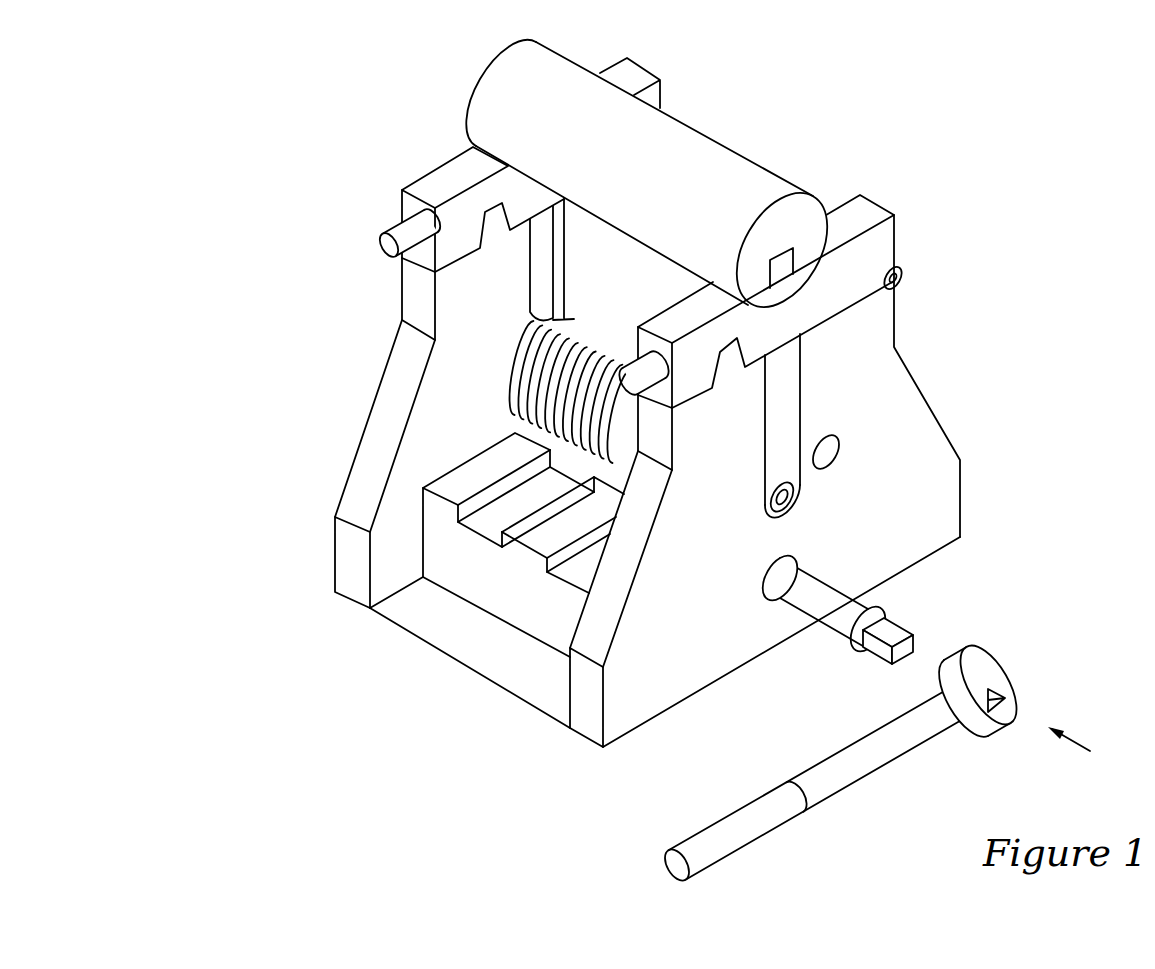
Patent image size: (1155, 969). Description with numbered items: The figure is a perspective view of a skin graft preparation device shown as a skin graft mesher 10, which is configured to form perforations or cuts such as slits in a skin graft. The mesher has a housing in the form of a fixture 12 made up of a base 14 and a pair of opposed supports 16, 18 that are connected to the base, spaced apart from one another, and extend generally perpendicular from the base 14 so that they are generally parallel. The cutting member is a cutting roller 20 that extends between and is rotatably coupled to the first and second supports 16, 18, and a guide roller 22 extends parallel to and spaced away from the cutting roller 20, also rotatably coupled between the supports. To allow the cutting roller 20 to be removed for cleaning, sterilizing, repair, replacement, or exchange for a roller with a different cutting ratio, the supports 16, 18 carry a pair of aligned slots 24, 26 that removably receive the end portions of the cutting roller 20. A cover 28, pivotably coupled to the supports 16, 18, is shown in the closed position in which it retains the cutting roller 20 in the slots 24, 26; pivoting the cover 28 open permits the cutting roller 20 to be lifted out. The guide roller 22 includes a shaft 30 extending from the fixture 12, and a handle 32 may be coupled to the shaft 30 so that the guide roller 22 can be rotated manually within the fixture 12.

The skin graft mesher 10 is at (946, 377).
The fixture 12 is at (274, 455).
The base 14 is at (630, 564).
The first support 16 is at (587, 736).
The second support 18 is at (350, 602).
The cutting roller 20 is at (530, 358).
The guide roller 22 is at (533, 433).
The slot 24 is at (800, 370).
The slot 26 is at (530, 255).
The cover 28 is at (882, 250).
The shaft 30 is at (843, 626).
The handle 32 is at (847, 775).